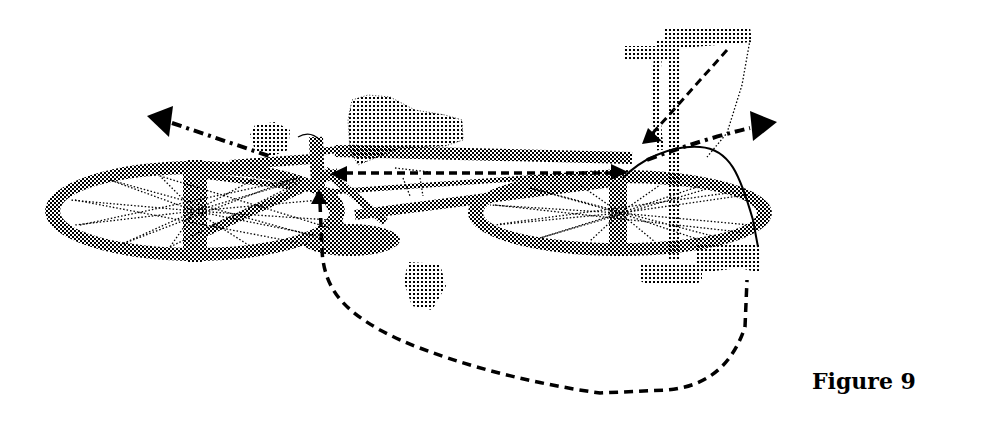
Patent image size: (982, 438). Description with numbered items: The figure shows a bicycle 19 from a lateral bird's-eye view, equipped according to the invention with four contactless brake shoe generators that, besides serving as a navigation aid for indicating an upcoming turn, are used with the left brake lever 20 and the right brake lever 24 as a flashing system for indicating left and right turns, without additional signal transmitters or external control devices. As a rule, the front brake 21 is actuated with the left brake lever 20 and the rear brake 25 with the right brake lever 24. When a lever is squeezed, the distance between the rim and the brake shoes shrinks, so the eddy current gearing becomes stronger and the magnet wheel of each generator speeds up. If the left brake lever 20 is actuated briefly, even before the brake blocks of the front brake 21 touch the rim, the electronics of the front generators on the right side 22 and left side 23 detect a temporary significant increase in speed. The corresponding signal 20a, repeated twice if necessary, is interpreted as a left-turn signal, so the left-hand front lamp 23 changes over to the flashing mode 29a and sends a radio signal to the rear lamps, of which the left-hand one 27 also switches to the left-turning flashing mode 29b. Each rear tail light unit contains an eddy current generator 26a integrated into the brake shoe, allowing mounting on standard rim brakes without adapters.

The bicycle 19 is at (498, 147).
The left brake lever 20 is at (673, 33).
The signal 20a is at (690, 92).
The front brake 21 is at (587, 258).
The right-hand front contactless brake shoe generator 22 is at (632, 253).
The left-hand front contactless brake shoe generator 23 is at (628, 147).
The right brake lever 24 is at (433, 360).
The rear brake 25 is at (325, 140).
The generator 26a is at (283, 227).
The left-hand rear contactless brake shoe generator 27 is at (288, 157).
The flashing mode 29a is at (190, 120).
The left-turning/flashing mode 29b is at (764, 105).